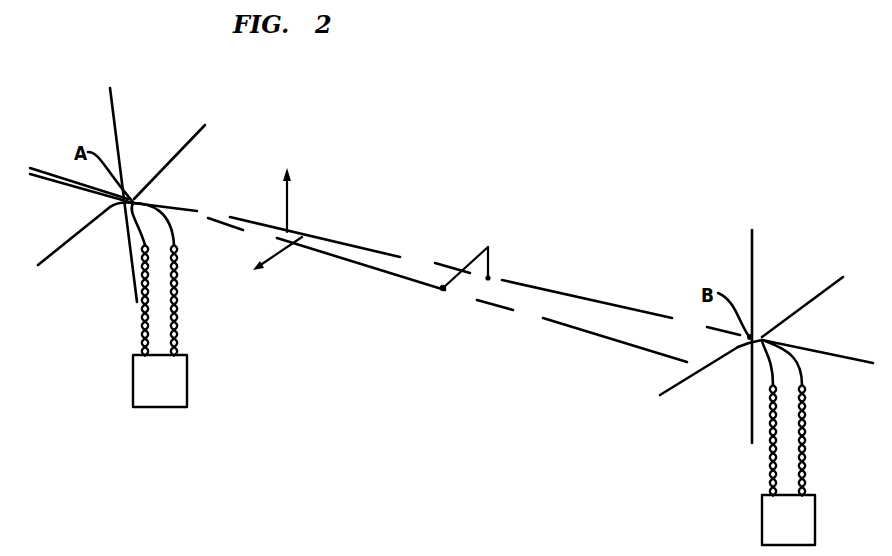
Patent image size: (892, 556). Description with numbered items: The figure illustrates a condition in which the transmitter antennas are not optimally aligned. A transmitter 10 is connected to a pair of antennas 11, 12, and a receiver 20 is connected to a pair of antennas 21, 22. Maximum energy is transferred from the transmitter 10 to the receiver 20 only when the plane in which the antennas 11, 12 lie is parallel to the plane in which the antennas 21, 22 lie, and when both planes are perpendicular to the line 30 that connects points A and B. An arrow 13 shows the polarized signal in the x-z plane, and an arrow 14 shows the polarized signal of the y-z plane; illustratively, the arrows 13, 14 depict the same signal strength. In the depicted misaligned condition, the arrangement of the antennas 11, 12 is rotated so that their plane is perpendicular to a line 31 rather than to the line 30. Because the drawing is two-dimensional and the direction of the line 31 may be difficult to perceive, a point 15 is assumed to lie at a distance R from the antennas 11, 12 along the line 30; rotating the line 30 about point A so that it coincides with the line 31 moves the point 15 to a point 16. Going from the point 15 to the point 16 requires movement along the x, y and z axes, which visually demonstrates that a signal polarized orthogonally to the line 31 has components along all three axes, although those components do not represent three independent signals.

The transmitter 10 is at (187, 377).
The antenna 11 is at (113, 105).
The antenna 12 is at (183, 150).
The arrow 13 is at (287, 205).
The arrow 14 is at (280, 253).
The point 15 is at (492, 278).
The point 16 is at (440, 288).
The receiver 20 is at (815, 517).
The antenna 21 is at (753, 250).
The antenna 22 is at (820, 298).
The line 30 is at (607, 303).
The line 31 is at (583, 333).